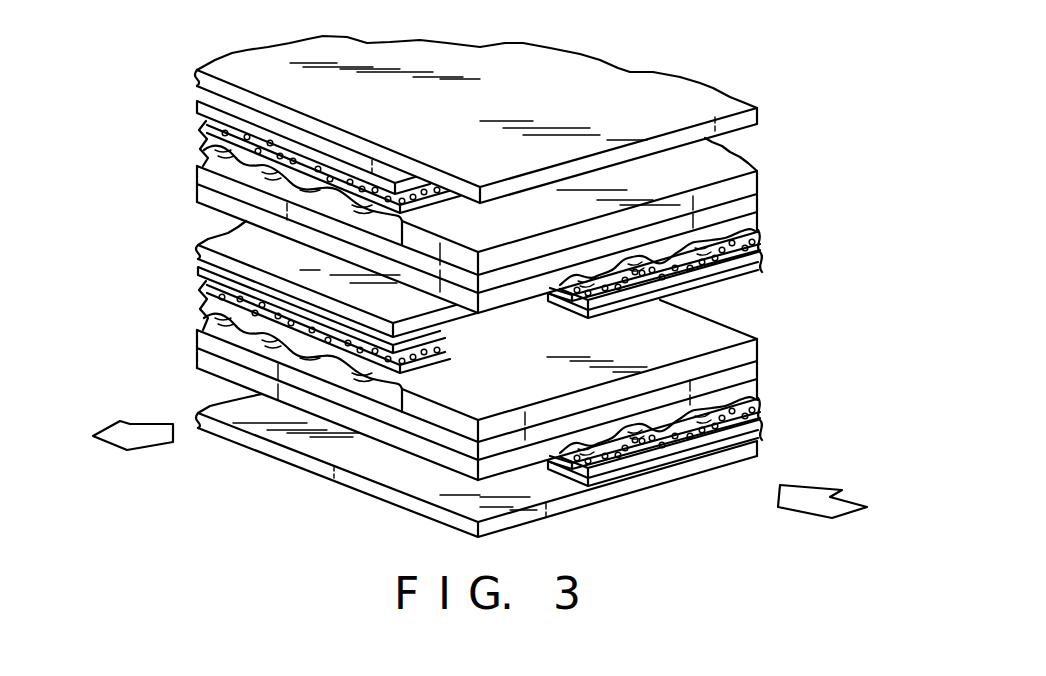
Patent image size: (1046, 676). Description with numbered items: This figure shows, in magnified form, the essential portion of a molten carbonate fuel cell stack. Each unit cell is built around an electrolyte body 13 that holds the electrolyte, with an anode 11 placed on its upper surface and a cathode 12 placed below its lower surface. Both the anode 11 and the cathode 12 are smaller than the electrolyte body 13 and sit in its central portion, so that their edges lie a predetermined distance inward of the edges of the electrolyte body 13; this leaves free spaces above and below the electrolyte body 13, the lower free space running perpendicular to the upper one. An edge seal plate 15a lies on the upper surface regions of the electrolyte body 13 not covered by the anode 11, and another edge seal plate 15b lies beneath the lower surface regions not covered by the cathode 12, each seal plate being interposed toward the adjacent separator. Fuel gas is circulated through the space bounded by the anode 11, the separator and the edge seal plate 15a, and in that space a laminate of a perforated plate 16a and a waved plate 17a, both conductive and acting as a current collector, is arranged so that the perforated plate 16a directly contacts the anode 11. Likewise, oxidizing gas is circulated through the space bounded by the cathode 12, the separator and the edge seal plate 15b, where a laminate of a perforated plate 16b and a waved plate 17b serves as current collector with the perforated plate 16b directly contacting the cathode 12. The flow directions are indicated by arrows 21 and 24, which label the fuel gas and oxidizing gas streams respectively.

The anode 11 is at (758, 278).
The cathode 12 is at (202, 272).
The electrolyte body 13 is at (753, 300).
The edge seal plate 15a is at (502, 298).
The edge seal plate 15b is at (440, 415).
The perforated plate 16a is at (757, 249).
The perforated plate 16b is at (207, 293).
The waved plate 17a is at (755, 220).
The waved plate 17b is at (200, 316).
The fuel gas flow 21 is at (800, 487).
The oxidizing gas flow 24 is at (118, 430).